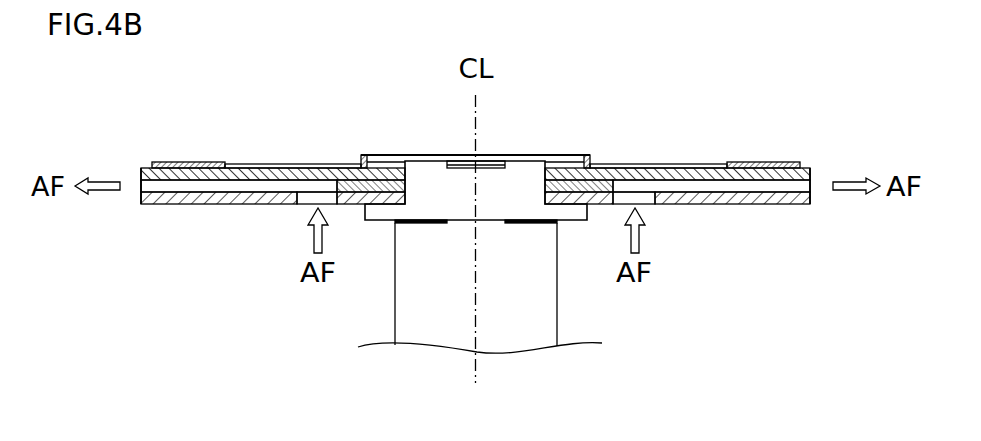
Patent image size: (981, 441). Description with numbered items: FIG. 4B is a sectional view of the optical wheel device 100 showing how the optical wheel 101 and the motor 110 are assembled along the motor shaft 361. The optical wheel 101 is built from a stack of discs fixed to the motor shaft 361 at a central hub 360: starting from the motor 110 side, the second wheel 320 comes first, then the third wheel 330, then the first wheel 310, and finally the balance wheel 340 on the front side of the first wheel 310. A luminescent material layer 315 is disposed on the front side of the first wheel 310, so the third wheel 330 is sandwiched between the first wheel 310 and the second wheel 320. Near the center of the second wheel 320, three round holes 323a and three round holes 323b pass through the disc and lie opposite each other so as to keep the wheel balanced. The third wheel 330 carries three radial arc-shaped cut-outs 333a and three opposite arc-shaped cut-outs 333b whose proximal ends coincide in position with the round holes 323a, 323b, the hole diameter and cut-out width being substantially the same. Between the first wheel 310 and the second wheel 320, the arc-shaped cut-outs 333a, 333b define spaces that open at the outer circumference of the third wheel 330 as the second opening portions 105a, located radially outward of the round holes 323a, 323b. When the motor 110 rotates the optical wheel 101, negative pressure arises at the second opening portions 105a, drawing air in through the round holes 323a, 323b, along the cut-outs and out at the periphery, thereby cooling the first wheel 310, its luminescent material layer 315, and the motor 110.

The optical wheel device 100 is at (837, 107).
The optical wheel 101 is at (813, 167).
The second opening portions 105a is at (141, 187).
The motor 110 is at (370, 315).
The first wheel 310 is at (268, 168).
The luminescent material layer 315 is at (183, 163).
The second wheel 320 is at (223, 205).
The round holes 323a is at (312, 197).
The round holes 323b is at (643, 198).
The third wheel 330 is at (345, 165).
The arc-shaped cut-outs 333a is at (165, 186).
The arc-shaped cut-outs 333b is at (785, 186).
The balance wheel 340 is at (592, 158).
The hub 360 is at (380, 221).
The motor shaft 361 is at (523, 158).